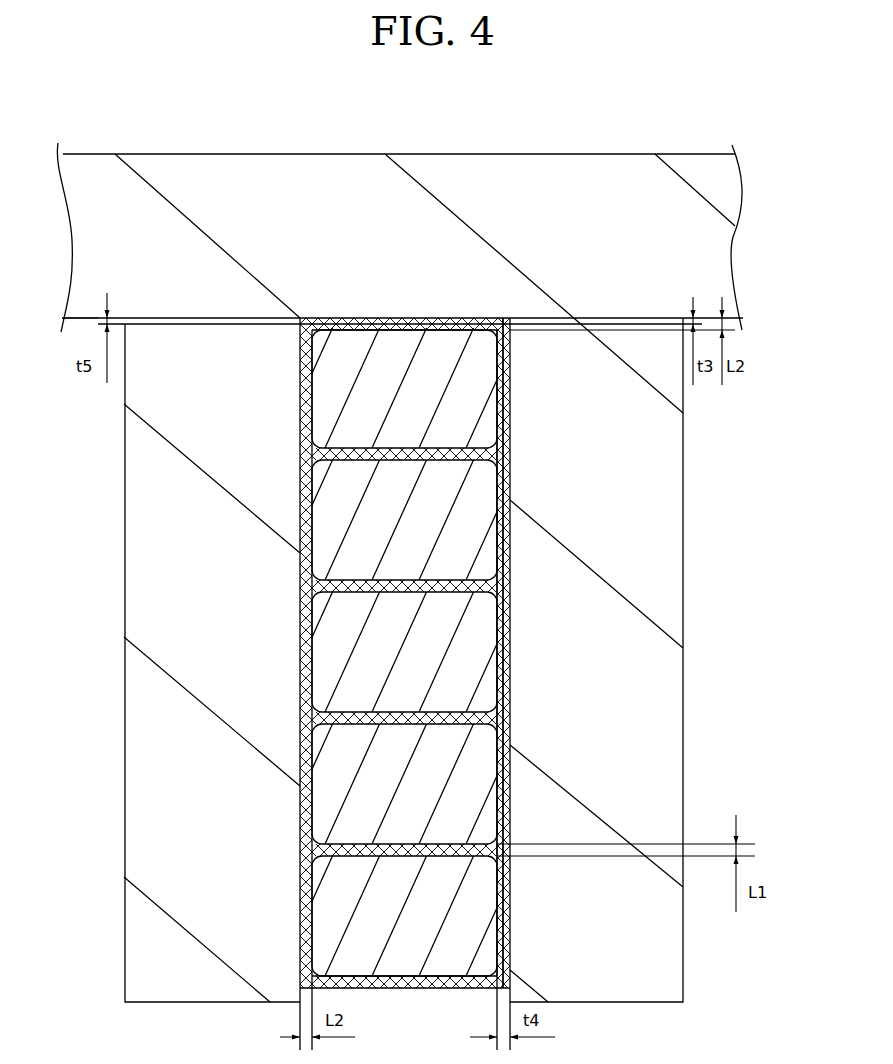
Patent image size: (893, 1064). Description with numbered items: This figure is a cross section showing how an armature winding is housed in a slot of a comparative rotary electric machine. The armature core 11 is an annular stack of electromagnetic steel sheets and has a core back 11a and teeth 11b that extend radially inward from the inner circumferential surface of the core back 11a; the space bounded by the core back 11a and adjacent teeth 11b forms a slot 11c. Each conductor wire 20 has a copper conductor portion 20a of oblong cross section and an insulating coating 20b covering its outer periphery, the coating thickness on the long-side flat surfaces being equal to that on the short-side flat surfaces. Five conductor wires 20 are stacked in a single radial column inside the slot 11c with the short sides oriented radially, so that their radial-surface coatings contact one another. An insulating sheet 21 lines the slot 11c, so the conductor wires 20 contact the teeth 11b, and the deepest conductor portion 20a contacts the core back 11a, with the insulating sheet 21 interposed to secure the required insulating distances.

The armature core 11 is at (433, 248).
The core back 11a is at (722, 243).
The teeth 11b is at (453, 684).
The slots 11c is at (510, 501).
The conductor wire 20 is at (417, 684).
The conductor portion 20a is at (473, 625).
The insulating coating 20b is at (504, 658).
The insulating sheet 21 is at (504, 752).